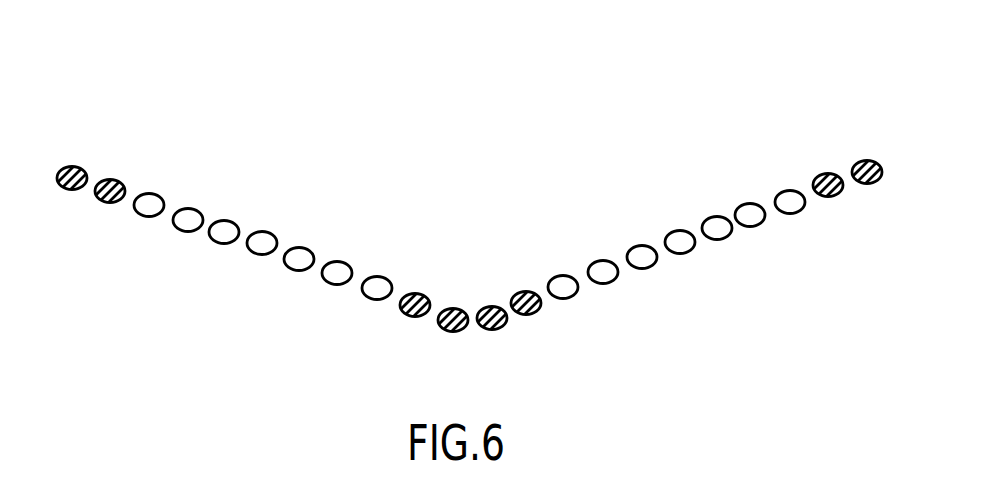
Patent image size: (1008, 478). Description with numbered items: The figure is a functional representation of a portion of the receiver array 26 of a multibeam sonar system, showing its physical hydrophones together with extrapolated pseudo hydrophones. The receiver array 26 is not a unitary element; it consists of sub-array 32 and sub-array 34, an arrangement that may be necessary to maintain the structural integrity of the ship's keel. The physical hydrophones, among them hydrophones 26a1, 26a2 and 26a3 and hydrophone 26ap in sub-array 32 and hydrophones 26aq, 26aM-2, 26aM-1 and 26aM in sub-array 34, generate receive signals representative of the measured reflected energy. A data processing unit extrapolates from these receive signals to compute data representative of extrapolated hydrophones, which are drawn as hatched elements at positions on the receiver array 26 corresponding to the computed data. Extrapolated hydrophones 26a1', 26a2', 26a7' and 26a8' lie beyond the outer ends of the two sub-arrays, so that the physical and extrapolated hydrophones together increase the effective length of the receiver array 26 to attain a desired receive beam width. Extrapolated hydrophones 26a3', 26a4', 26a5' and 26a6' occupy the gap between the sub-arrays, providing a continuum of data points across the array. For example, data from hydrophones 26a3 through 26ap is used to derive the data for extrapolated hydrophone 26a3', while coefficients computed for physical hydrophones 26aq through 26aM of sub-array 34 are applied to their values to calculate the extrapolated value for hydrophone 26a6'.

The receiver array 26 is at (707, 75).
The sub-array 32 is at (208, 380).
The sub-array 34 is at (692, 343).
The physical hydrophone 26a1 is at (127, 240).
The physical hydrophone 26a2 is at (226, 192).
The physical hydrophone 26a3 is at (209, 270).
The physical hydrophone 26ap is at (377, 300).
The physical hydrophone 26aq is at (565, 299).
The physical hydrophone 26aM-2 is at (710, 220).
The physical hydrophone 26aM-1 is at (747, 206).
The physical hydrophone 26aM is at (790, 214).
The extrapolated hydrophone 26a1' is at (80, 151).
The extrapolated hydrophone 26a2' is at (147, 167).
The extrapolated hydrophone 26a3' is at (432, 273).
The extrapolated hydrophone 26a4' is at (440, 351).
The extrapolated hydrophone 26a5' is at (513, 349).
The extrapolated hydrophone 26a6' is at (538, 272).
The extrapolated hydrophone 26a7' is at (804, 154).
The extrapolated hydrophone 26a8' is at (879, 204).